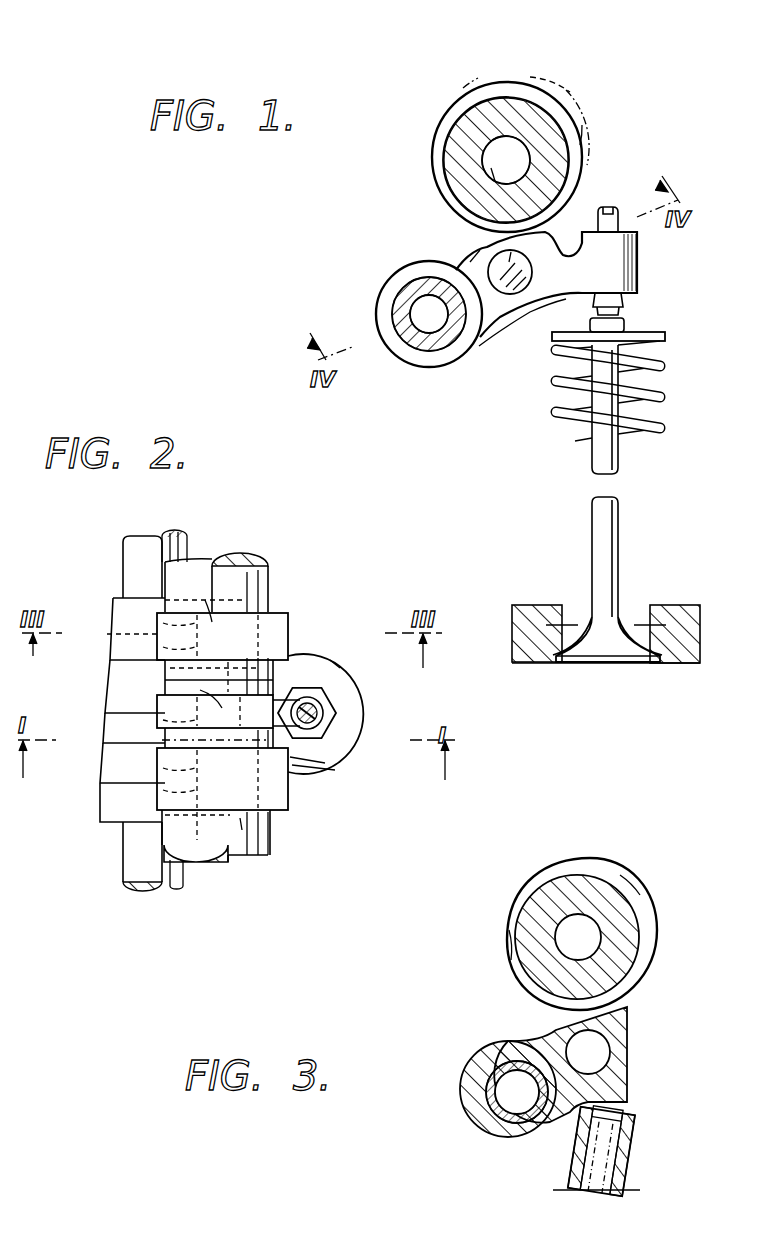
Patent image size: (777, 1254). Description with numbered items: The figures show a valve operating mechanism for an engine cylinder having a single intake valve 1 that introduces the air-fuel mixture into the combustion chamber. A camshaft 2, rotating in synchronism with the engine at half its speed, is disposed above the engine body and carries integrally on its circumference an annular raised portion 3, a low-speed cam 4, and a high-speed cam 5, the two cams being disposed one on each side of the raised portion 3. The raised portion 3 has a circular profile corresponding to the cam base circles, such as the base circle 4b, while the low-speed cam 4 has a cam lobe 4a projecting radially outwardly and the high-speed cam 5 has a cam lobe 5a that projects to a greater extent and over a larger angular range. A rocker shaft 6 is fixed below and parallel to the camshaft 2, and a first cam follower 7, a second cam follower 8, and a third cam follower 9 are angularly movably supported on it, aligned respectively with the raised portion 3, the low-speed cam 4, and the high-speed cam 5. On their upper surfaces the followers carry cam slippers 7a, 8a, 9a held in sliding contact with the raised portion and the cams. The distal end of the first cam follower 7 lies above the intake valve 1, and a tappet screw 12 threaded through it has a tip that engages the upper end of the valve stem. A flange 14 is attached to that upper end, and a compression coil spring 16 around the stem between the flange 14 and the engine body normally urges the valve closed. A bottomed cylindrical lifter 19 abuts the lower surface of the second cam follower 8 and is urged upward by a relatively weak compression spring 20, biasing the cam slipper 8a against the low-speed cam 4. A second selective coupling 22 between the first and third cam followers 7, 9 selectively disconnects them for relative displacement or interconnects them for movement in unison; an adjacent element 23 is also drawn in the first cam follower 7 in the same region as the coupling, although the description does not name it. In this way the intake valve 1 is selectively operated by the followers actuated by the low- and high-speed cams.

In FIG. 1, the intake valve 1 is at (620, 458).
In FIG. 2, the intake valve 1 is at (347, 669).
In FIG. 1, the camshaft 2 is at (462, 117).
In FIG. 2, the camshaft 2 is at (237, 553).
In FIG. 3, the camshaft 2 is at (530, 905).
In FIG. 1, the annular raised portion 3 is at (433, 147).
In FIG. 2, the annular raised portion 3 is at (160, 712).
In FIG. 1, the low-speed cam 4 is at (528, 82).
In FIG. 2, the low-speed cam 4 is at (160, 641).
In FIG. 3, the low-speed cam 4 is at (561, 860).
In FIG. 1, the cam lobe 4a is at (584, 133).
In FIG. 3, the cam lobe 4a is at (629, 862).
In FIG. 1, the base circle 4b is at (468, 94).
In FIG. 3, the base circle 4b is at (507, 943).
In FIG. 1, the high-speed cam 5 is at (582, 106).
In FIG. 2, the high-speed cam 5 is at (160, 790).
In FIG. 1, the cam lobe 5a is at (565, 90).
In FIG. 1, the rocker shaft 6 is at (376, 313).
In FIG. 2, the rocker shaft 6 is at (122, 858).
In FIG. 3, the rocker shaft 6 is at (468, 1071).
In FIG. 1, the first cam follower 7 is at (523, 305).
In FIG. 2, the first cam follower 7 is at (110, 681).
In FIG. 1, the cam slipper 7a is at (497, 184).
In FIG. 2, the cam slipper 7a is at (218, 705).
In FIG. 2, the second cam follower 8 is at (113, 604).
In FIG. 3, the second cam follower 8 is at (553, 1037).
In FIG. 2, the cam slipper 8a is at (212, 620).
In FIG. 3, the cam slipper 8a is at (599, 1010).
In FIG. 2, the third cam follower 9 is at (108, 760).
In FIG. 2, the cam slipper 9a is at (243, 814).
In FIG. 1, the tappet screw 12 is at (609, 207).
In FIG. 2, the tappet screw 12 is at (307, 700).
In FIG. 1, the flange 14 is at (642, 332).
In FIG. 2, the flange 14 is at (358, 752).
In FIG. 1, the compression coil spring 16 is at (666, 375).
In FIG. 3, the bottomed cylindrical lifter 19 is at (630, 1150).
In FIG. 3, the compression spring 20 is at (622, 1191).
In FIG. 1, the second selective coupling 22 is at (468, 256).
In FIG. 1, the rocker arm bore 23 is at (522, 285).